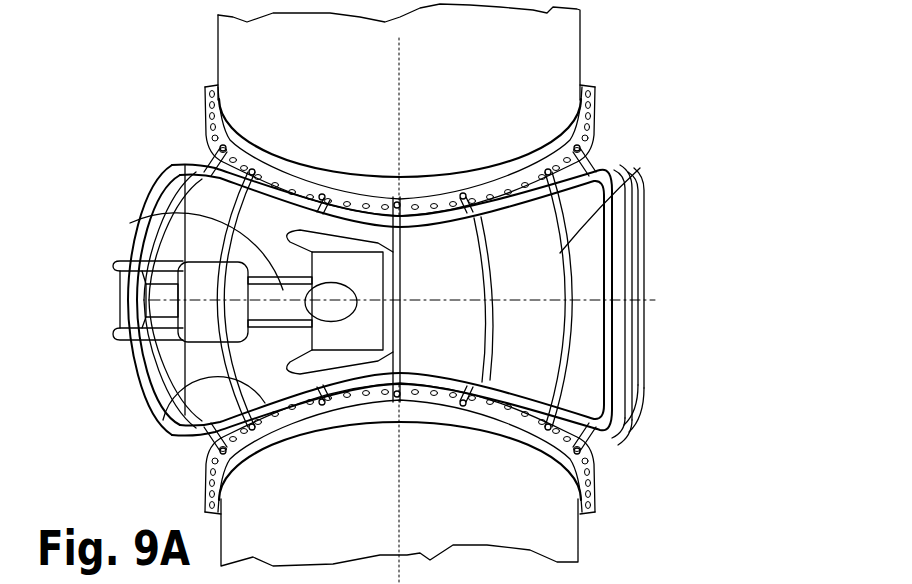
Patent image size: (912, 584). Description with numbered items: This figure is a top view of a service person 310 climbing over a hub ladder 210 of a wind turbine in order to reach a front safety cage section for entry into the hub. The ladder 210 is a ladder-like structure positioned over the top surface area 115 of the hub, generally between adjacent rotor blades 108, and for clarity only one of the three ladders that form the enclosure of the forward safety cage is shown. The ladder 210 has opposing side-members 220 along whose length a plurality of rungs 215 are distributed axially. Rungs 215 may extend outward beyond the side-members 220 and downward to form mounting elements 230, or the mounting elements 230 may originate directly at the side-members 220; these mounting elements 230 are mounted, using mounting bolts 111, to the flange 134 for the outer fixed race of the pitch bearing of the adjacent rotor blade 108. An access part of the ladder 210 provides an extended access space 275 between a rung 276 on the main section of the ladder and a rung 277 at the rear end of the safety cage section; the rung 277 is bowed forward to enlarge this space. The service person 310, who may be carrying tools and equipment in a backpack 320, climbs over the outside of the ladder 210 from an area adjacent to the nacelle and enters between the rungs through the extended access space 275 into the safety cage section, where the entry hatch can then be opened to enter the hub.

The rotor blade 108 is at (580, 28).
The mounting bolts 111 is at (322, 202).
The flange 134 is at (485, 205).
The side-member 220 is at (652, 141).
The rung 215 is at (620, 205).
The ladder 210 is at (645, 229).
The mounting element 230 is at (206, 150).
The extended access space 275 is at (177, 360).
The rung 276 is at (178, 415).
The rung 277 is at (193, 166).
The service person 310 is at (180, 228).
The backpack 320 is at (213, 267).
The top surface area 115 is at (443, 327).